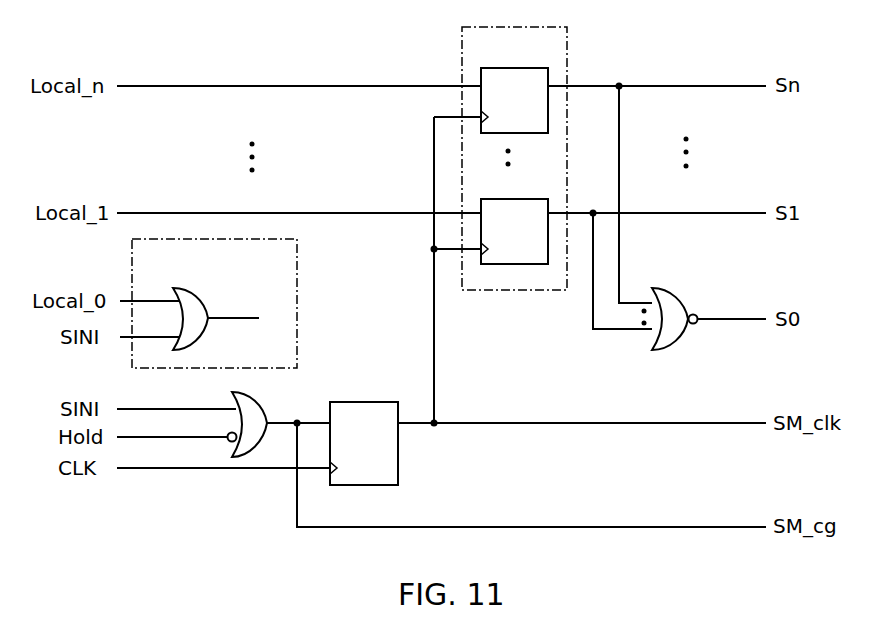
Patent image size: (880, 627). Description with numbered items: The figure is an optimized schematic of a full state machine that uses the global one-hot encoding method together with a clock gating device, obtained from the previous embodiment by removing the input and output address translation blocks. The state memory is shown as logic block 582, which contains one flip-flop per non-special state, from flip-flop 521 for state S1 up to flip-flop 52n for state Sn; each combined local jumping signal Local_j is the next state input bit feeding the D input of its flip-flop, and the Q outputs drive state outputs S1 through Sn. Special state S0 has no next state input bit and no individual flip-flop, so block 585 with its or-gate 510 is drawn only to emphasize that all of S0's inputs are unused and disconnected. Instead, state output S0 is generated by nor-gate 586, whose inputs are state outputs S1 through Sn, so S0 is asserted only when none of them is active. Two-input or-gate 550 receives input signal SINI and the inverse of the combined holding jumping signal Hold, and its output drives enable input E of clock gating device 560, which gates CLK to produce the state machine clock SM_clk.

The flip-flop 52n is at (487, 66).
The flip-flop 521 is at (487, 198).
The logic block 582 is at (567, 65).
The or-gate 510 is at (190, 290).
The block 585 is at (297, 290).
The nor-gate 586 is at (665, 289).
The 2-input or-gate 550 is at (245, 396).
The clock gating device 560 is at (355, 402).